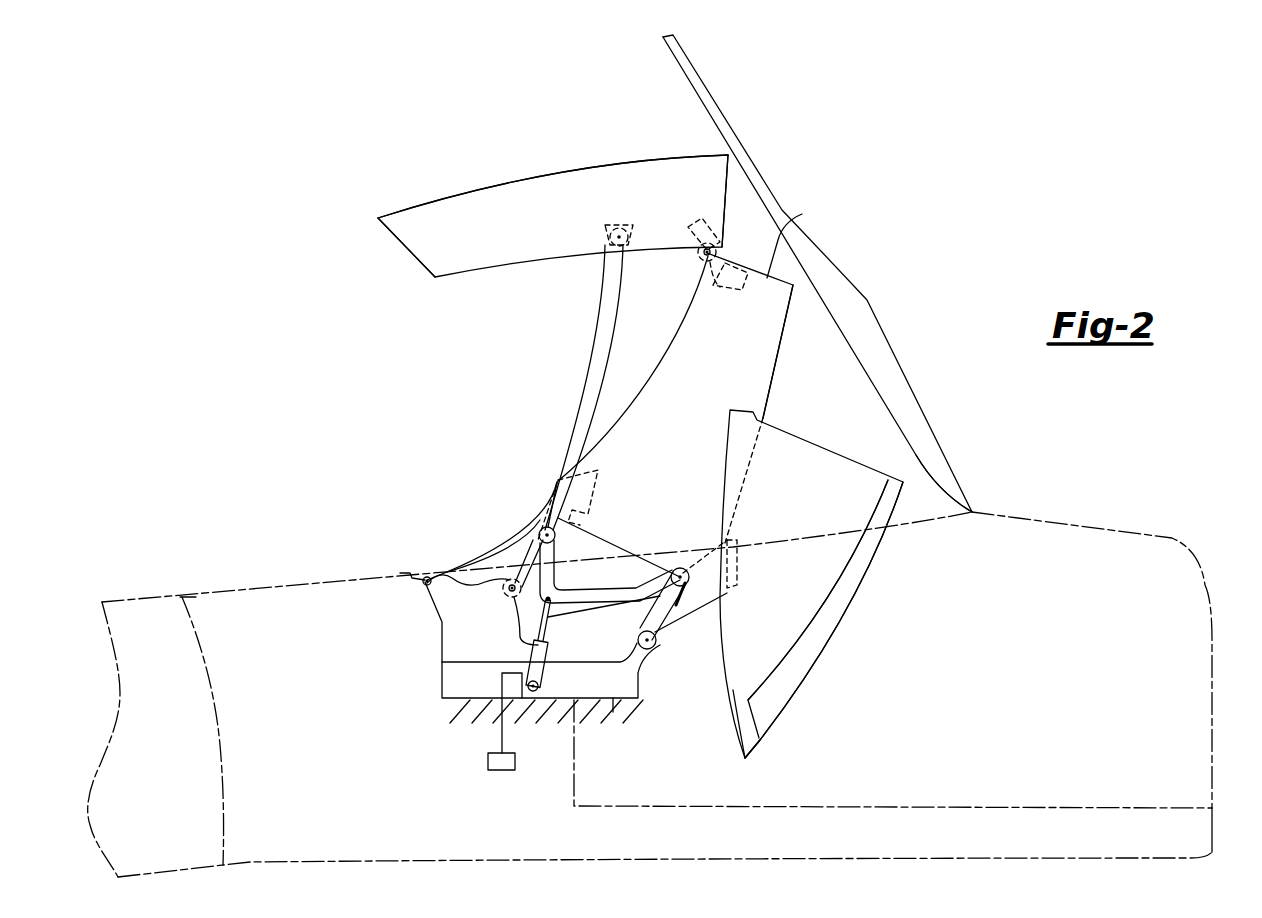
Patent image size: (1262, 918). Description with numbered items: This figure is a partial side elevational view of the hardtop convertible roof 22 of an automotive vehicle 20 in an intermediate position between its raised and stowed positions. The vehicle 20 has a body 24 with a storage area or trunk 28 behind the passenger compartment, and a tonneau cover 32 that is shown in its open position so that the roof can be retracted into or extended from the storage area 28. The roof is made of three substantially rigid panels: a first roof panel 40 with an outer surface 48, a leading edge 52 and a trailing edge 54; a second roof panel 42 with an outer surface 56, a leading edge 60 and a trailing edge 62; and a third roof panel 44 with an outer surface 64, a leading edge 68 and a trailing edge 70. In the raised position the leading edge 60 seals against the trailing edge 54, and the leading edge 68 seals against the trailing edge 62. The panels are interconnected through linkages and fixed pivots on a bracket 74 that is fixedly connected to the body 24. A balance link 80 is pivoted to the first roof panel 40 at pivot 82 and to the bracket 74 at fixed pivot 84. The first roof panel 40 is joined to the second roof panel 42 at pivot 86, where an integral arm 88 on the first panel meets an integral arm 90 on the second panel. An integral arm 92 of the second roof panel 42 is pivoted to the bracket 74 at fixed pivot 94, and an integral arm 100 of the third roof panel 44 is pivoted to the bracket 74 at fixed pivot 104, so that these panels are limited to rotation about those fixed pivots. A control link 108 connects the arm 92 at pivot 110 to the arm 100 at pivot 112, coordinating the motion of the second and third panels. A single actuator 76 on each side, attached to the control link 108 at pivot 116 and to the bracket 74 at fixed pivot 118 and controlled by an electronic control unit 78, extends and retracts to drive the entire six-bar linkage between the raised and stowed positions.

The automotive vehicle 20 is at (218, 568).
The hardtop convertible roof 22 is at (480, 421).
The body 24 is at (1125, 545).
The storage area or trunk 28 is at (1150, 793).
The tonneau cover 32 is at (862, 310).
The first roof panel 40 is at (537, 246).
The second roof panel 42 is at (731, 352).
The third roof panel 44 is at (814, 505).
The outer surface 48 is at (427, 204).
The leading edge 52 is at (403, 247).
The trailing edge 54 is at (740, 183).
The outer surface 56 is at (775, 381).
The leading edge 60 is at (796, 236).
The trailing edge 62 is at (588, 533).
The outer surface 64 is at (847, 614).
The leading edge 68 is at (917, 463).
The trailing edge 70 is at (735, 747).
The bracket 74 is at (595, 690).
The actuator 76 is at (518, 640).
The electronic control unit 78 is at (502, 770).
The balance link 80 is at (600, 345).
The pivot 82 is at (610, 245).
The fixed pivot 84 is at (426, 578).
The pivot 86 is at (700, 257).
The arm 88 is at (695, 225).
The arm 90 is at (737, 258).
The arm 92 is at (545, 530).
The fixed pivot 94 is at (508, 592).
The arm 100 is at (690, 617).
The fixed pivot 104 is at (653, 647).
The control link 108 is at (610, 603).
The pivot 110 is at (542, 536).
The pivot 112 is at (683, 573).
The pivot 116 is at (552, 607).
The fixed pivot 118 is at (537, 707).